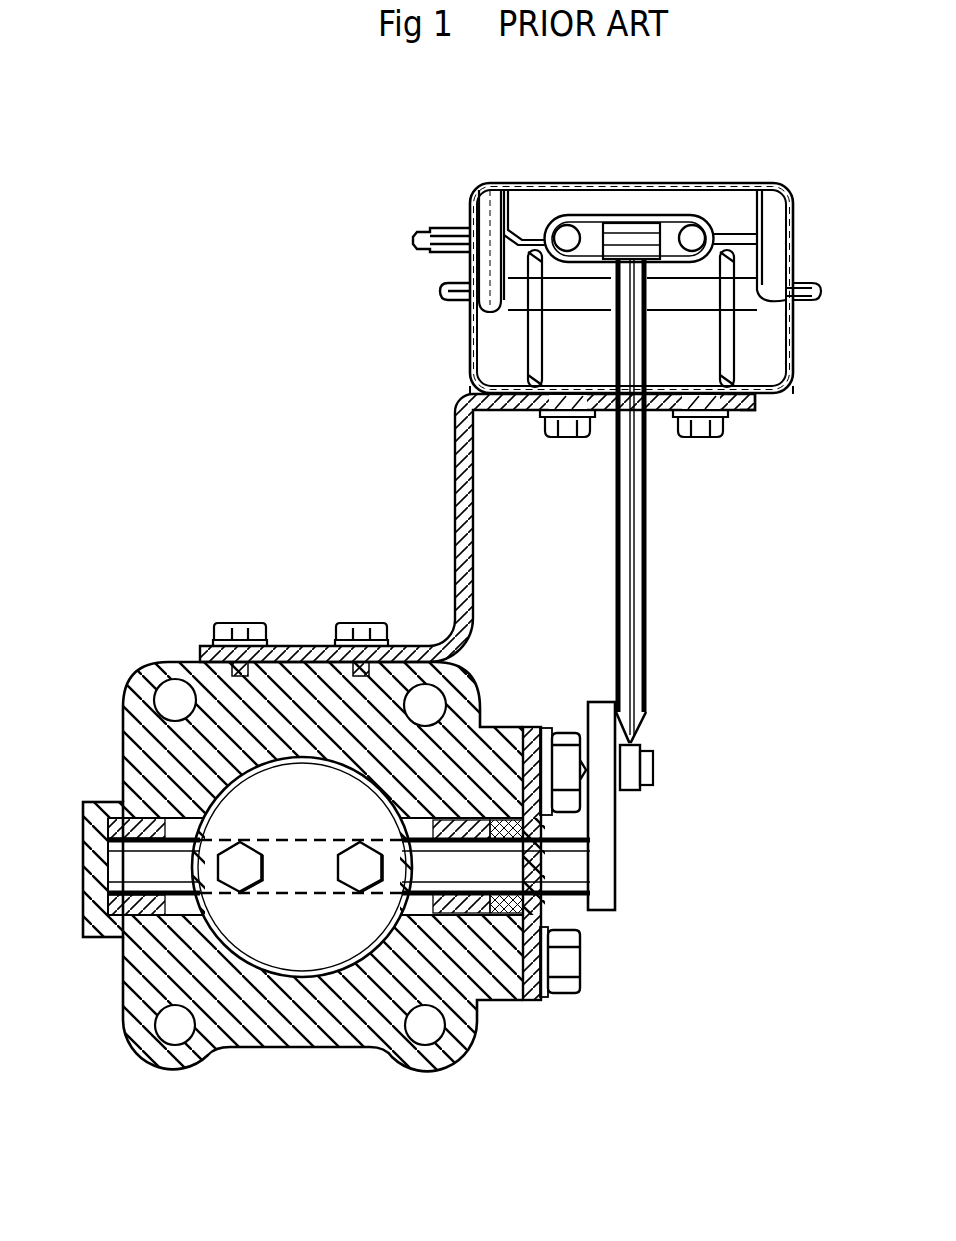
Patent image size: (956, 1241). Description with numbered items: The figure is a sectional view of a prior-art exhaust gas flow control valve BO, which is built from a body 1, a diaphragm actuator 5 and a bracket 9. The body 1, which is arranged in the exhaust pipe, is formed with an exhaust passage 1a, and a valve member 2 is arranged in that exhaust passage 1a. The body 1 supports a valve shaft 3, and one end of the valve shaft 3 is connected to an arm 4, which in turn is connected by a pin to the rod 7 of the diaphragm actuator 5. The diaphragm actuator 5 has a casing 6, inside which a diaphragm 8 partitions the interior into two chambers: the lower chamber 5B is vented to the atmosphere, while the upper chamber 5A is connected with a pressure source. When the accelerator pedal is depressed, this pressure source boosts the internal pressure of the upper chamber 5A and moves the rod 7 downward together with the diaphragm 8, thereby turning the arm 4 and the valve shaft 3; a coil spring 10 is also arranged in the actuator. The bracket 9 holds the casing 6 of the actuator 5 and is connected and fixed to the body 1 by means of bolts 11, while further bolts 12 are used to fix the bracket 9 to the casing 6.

The body 1 is at (128, 718).
The exhaust passage 1a is at (292, 977).
The valve member 2 is at (333, 950).
The valve shaft 3 is at (477, 1033).
The arm 4 is at (603, 822).
The diaphragm actuator 5 is at (769, 162).
The upper chamber 5A is at (487, 210).
The lower chamber 5B is at (493, 337).
The casing 6 is at (466, 196).
The rod 7 is at (633, 495).
The diaphragm 8 is at (765, 258).
The bracket 9 is at (465, 508).
The coil spring 10 is at (767, 398).
The bolts 11 is at (247, 622).
The bolts 12 is at (570, 438).
The exhaust gas flow control valve BO is at (727, 1052).